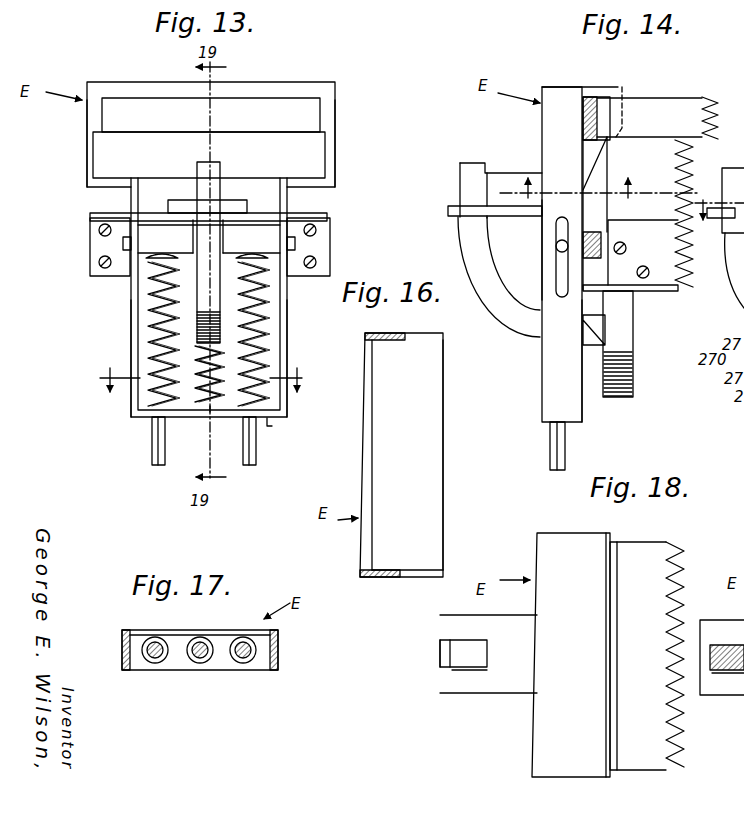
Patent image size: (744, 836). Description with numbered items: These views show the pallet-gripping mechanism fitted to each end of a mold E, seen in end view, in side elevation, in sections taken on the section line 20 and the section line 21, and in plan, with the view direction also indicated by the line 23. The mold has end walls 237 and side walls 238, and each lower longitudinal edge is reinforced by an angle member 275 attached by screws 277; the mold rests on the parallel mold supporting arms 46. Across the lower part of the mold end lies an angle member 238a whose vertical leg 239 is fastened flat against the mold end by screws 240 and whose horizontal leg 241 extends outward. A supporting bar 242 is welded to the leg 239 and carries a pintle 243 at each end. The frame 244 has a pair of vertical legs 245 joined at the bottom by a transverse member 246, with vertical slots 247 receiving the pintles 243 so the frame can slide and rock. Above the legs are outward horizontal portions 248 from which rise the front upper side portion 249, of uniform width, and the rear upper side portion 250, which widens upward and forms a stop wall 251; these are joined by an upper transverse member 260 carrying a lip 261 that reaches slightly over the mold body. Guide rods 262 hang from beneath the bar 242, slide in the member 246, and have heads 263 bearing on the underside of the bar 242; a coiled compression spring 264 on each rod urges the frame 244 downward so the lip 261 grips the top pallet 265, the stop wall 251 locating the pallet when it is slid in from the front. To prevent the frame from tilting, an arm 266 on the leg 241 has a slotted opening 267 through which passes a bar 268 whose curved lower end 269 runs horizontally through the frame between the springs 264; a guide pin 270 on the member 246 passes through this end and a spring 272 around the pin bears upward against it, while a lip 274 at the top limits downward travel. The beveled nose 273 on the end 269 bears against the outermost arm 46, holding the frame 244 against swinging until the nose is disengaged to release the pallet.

In FIG. 14, the section line 20 is at (572, 193).
In FIG. 13, the section line 21 is at (198, 380).
In FIG. 14, the section line 23 is at (716, 238).
In FIG. 14, the mold supporting arm 46 is at (633, 334).
In FIG. 13, the end wall 237 is at (318, 143).
In FIG. 14, the side wall 238 is at (700, 153).
In FIG. 13, the angle member 238a is at (314, 250).
In FIG. 14, the angle member 238a is at (609, 230).
In FIG. 13, the vertical leg 239 is at (328, 270).
In FIG. 14, the vertical leg 239 is at (557, 314).
In FIG. 13, the screw 240 is at (312, 229).
In FIG. 13, the horizontal leg 241 is at (312, 212).
In FIG. 14, the horizontal leg 241 is at (583, 222).
In FIG. 13, the supporting bar 242 is at (150, 240).
In FIG. 14, the supporting bar 242 is at (588, 250).
In FIG. 13, the pintle 243 is at (123, 243).
In FIG. 14, the pintle 243 is at (556, 246).
In FIG. 18, the pintle 243 is at (721, 702).
In FIG. 13, the frame 244 is at (284, 334).
In FIG. 14, the frame 244 is at (548, 389).
In FIG. 16, the frame 244 is at (378, 547).
In FIG. 17, the frame 244 is at (238, 668).
In FIG. 18, the frame 244 is at (552, 540).
In FIG. 13, the vertical leg 245 is at (133, 347).
In FIG. 14, the vertical leg 245 is at (543, 406).
In FIG. 17, the vertical leg 245 is at (122, 654).
In FIG. 13, the transverse member 246 is at (286, 429).
In FIG. 14, the slot 247 is at (557, 280).
In FIG. 13, the horizontal portion 248 is at (155, 160).
In FIG. 13, the front upper side portion 249 is at (335, 152).
In FIG. 14, the front upper side portion 249 is at (557, 140).
In FIG. 16, the front upper side portion 249 is at (395, 336).
In FIG. 13, the rear upper side portion 250 is at (87, 157).
In FIG. 14, the rear upper side portion 250 is at (583, 114).
In FIG. 16, the rear upper side portion 250 is at (393, 580).
In FIG. 14, the stop wall 251 is at (606, 152).
In FIG. 16, the stop wall 251 is at (420, 568).
In FIG. 18, the stop wall 251 is at (440, 553).
In FIG. 13, the upper transverse member 260 is at (305, 90).
In FIG. 16, the upper transverse member 260 is at (364, 475).
In FIG. 14, the lip 261 is at (606, 90).
In FIG. 16, the lip 261 is at (443, 475).
In FIG. 18, the lip 261 is at (618, 544).
In FIG. 13, the guide rod 262 is at (152, 440).
In FIG. 14, the guide rod 262 is at (565, 440).
In FIG. 17, the guide rod 262 is at (155, 660).
In FIG. 13, the head 263 is at (150, 258).
In FIG. 13, the coiled compression spring 264 is at (150, 392).
In FIG. 17, the coiled compression spring 264 is at (150, 637).
In FIG. 13, the top pallet 265 is at (315, 115).
In FIG. 14, the top pallet 265 is at (668, 99).
In FIG. 18, the top pallet 265 is at (680, 552).
In FIG. 13, the arm 266 is at (232, 206).
In FIG. 14, the arm 266 is at (445, 200).
In FIG. 18, the arm 266 is at (496, 608).
In FIG. 14, the slotted opening 267 is at (692, 244).
In FIG. 18, the slotted opening 267 is at (440, 655).
In FIG. 13, the bar 268 is at (218, 168).
In FIG. 14, the bar 268 is at (470, 238).
In FIG. 18, the bar 268 is at (478, 650).
In FIG. 13, the lower end 269 is at (198, 322).
In FIG. 14, the lower end 269 is at (530, 332).
In FIG. 13, the guide pin 270 is at (205, 412).
In FIG. 17, the guide pin 270 is at (205, 637).
In FIG. 13, the coiled compression spring 272 is at (222, 412).
In FIG. 17, the coiled compression spring 272 is at (200, 660).
In FIG. 14, the beveled nose 273 is at (606, 332).
In FIG. 14, the lip 274 is at (490, 172).
In FIG. 13, the angle member 275 is at (88, 234).
In FIG. 14, the angle member 275 is at (680, 288).
In FIG. 14, the screw 277 is at (626, 250).